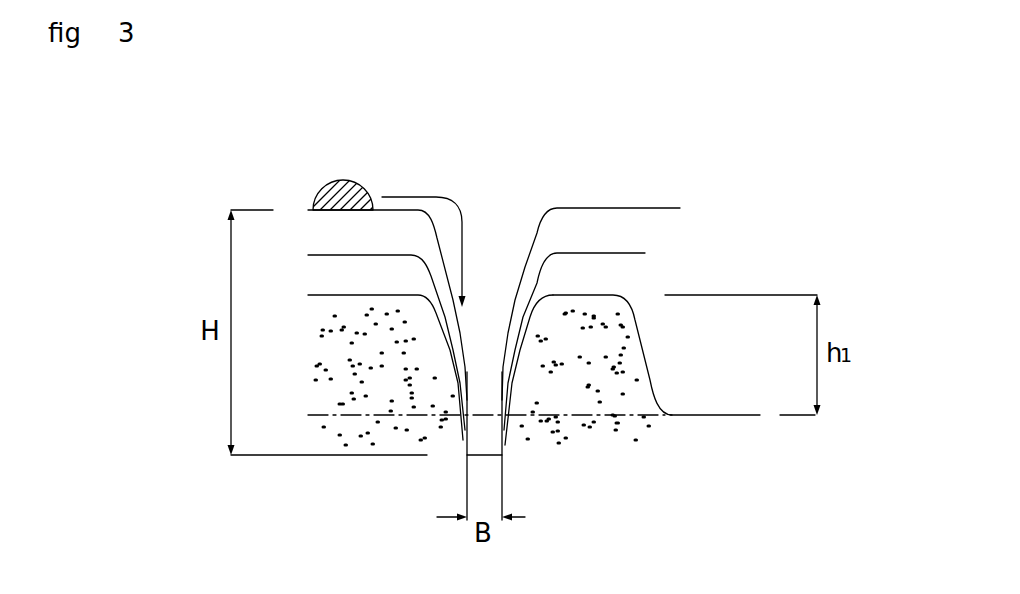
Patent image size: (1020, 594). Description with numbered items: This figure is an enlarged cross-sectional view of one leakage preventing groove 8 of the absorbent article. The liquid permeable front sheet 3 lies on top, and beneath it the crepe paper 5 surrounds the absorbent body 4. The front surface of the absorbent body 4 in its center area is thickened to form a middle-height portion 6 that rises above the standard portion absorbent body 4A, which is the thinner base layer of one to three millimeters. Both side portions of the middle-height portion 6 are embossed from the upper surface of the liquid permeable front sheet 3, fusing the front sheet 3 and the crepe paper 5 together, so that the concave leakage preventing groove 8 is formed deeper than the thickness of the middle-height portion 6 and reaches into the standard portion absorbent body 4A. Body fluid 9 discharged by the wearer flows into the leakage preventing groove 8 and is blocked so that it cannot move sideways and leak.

The liquid permeable front sheet 3 is at (570, 208).
The absorbent body 4 is at (314, 285).
The standard portion absorbent body 4A is at (380, 447).
The crepe paper 5 is at (618, 253).
The middle-height portion 6 is at (632, 360).
The leakage preventing groove 8 is at (468, 367).
The body fluid 9 is at (340, 180).